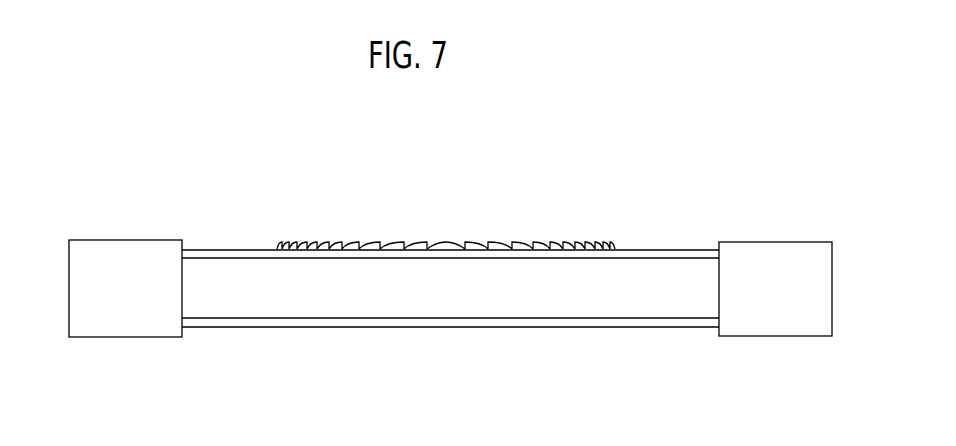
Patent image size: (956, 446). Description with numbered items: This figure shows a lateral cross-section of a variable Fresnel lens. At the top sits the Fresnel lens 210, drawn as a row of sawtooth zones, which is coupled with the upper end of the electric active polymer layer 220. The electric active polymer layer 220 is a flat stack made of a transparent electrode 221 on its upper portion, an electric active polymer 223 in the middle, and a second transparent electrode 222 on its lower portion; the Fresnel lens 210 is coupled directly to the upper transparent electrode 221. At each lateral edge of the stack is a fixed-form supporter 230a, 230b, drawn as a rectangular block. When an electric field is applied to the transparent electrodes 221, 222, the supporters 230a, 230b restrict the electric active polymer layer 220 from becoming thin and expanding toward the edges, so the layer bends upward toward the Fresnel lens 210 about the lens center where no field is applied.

The Fresnel lens 210 is at (614, 243).
The electric active polymer layer 220 is at (436, 291).
The transparent electrode 221 is at (691, 253).
The transparent electrode 222 is at (673, 322).
The electric active polymer 223 is at (542, 292).
The supporter 230a is at (93, 247).
The supporter 230b is at (780, 250).